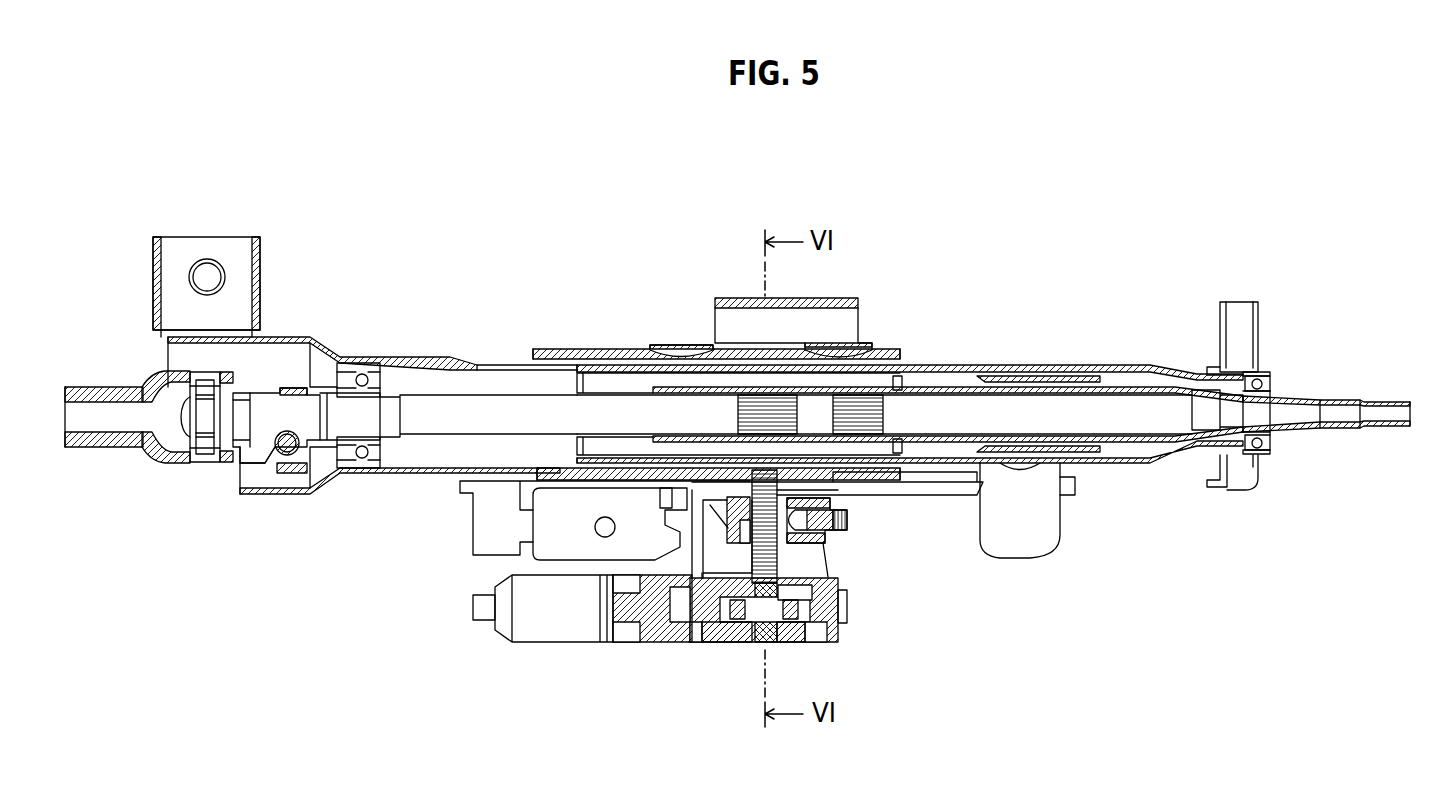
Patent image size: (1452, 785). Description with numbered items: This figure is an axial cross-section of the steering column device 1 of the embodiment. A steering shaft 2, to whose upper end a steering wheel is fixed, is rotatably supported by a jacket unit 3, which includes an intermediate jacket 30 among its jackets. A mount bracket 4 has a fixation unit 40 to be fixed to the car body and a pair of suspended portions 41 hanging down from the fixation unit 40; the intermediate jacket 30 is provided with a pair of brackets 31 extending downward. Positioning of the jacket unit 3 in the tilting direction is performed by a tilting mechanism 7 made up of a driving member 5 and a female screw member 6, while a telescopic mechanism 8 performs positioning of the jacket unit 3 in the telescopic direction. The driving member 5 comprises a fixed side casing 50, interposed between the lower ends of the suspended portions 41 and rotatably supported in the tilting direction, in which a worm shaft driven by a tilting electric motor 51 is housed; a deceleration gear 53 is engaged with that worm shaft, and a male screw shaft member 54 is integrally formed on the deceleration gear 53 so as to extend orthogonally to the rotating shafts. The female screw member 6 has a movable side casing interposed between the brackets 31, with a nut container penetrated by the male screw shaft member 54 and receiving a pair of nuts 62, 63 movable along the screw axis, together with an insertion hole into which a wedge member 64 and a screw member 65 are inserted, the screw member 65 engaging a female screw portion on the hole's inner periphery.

The steering column device 1 is at (936, 241).
The steering shaft 2 is at (943, 376).
The jacket unit 3 is at (634, 303).
The mount bracket 4 is at (839, 299).
The driving member 5 is at (870, 619).
The female screw member 6 is at (866, 537).
The tilting mechanism 7 is at (950, 548).
The telescopic mechanism 8 is at (434, 546).
The intermediate jacket 30 is at (607, 352).
The brackets 31 is at (647, 481).
The fixation unit 40 is at (858, 298).
The suspended portions 41 is at (850, 323).
The fixed side casing 50 is at (660, 625).
The tilting electric motor 51 is at (550, 635).
The deceleration gear 53 is at (785, 625).
The male screw shaft member 54 is at (780, 558).
The nut 62 is at (722, 531).
The nut 63 is at (713, 488).
The wedge member 64 is at (773, 549).
The screw member 65 is at (827, 518).